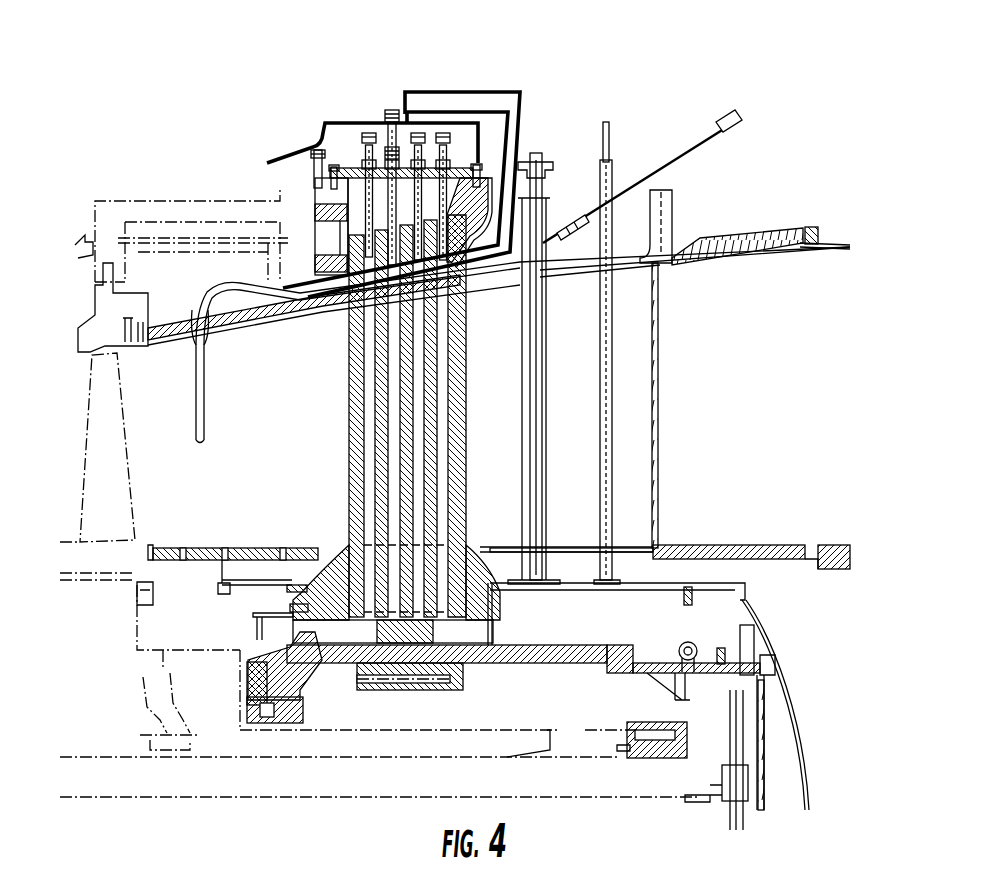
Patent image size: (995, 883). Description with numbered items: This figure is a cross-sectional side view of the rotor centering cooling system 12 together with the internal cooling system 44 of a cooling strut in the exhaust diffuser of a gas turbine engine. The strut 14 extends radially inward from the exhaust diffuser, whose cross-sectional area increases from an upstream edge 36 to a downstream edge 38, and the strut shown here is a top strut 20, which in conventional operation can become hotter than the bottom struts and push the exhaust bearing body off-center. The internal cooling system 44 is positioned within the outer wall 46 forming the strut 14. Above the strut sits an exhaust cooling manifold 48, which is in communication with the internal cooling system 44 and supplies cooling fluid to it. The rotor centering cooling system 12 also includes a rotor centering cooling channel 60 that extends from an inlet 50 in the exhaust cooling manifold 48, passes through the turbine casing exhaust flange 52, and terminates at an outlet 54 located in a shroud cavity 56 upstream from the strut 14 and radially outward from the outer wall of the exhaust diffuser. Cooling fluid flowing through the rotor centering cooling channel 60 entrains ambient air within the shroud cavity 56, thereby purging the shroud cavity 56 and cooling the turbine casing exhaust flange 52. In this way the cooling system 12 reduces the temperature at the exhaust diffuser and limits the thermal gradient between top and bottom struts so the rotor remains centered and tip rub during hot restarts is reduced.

The rotor centering cooling system 12 is at (574, 122).
The strut 14 is at (458, 462).
The top strut 20 is at (466, 369).
The upstream edge 36 is at (125, 348).
The downstream edge 38 is at (844, 250).
The internal cooling system 44 is at (440, 418).
The outer wall 46 is at (466, 510).
The exhaust cooling manifold 48 is at (351, 143).
The inlet 50 is at (396, 108).
The turbine casing exhaust flange 52 is at (293, 252).
The outlet 54 is at (295, 290).
The shroud cavity 56 is at (168, 290).
The rotor centering cooling channel 60 is at (481, 92).